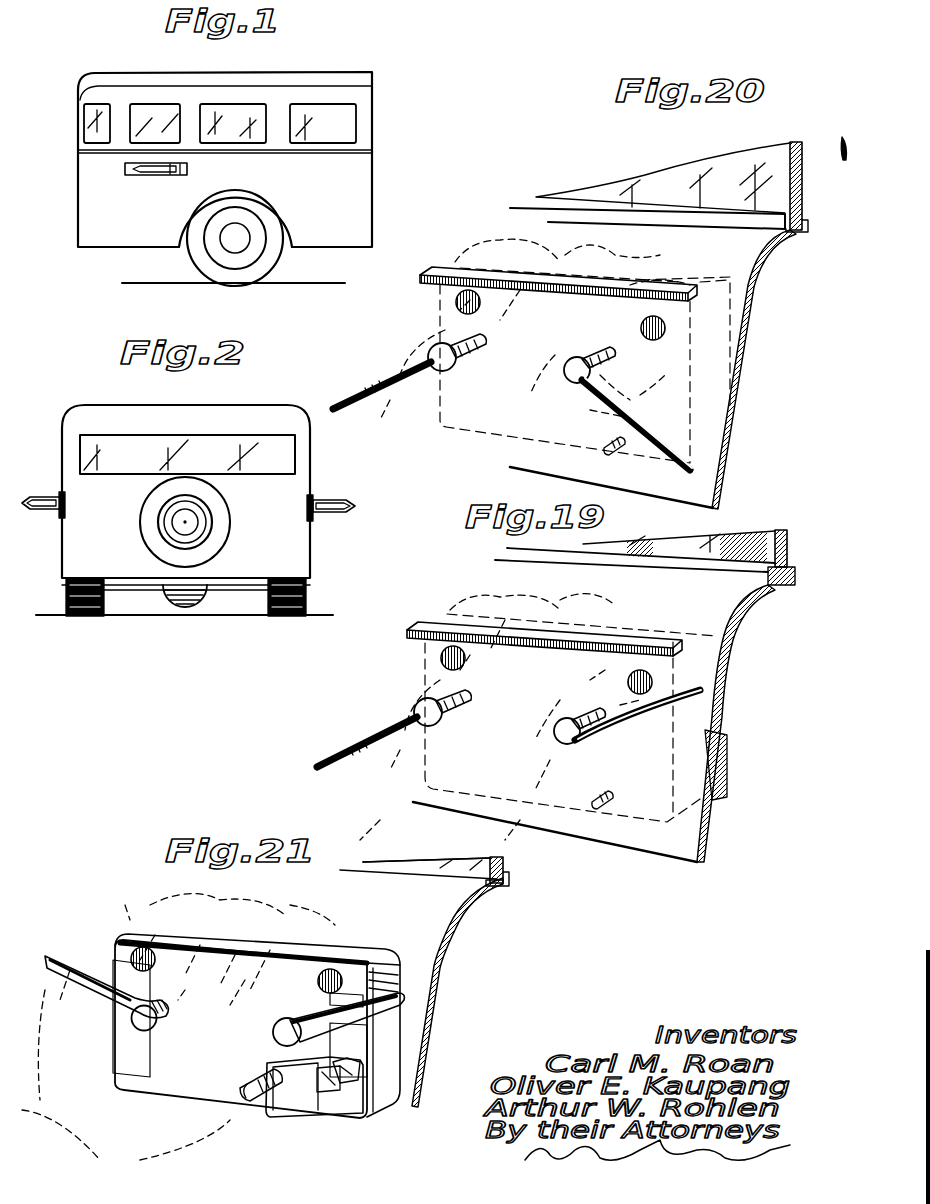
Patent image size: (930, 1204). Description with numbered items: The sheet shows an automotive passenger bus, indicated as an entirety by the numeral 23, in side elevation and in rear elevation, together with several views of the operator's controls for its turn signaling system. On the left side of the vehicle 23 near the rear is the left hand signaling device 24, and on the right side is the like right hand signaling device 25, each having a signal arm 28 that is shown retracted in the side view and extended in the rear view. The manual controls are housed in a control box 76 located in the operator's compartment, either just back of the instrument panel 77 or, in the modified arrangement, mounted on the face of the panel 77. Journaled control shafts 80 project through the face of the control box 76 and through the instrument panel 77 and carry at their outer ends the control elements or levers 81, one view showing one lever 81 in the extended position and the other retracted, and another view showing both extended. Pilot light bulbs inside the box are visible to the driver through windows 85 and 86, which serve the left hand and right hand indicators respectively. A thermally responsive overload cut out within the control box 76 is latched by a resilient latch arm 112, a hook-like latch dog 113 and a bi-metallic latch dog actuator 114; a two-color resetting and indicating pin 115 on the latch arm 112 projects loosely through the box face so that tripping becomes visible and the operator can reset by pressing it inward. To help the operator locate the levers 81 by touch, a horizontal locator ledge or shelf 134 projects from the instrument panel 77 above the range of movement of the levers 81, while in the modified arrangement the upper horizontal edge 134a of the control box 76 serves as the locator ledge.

In FIG. 1, the automotive vehicle 23 is at (90, 210).
In FIG. 2, the automotive vehicle 23 is at (72, 456).
In FIG. 2, the left hand signaling device 24 is at (60, 515).
In FIG. 1, the right hand signaling device 25 is at (170, 178).
In FIG. 2, the right hand signaling device 25 is at (318, 518).
In FIG. 1, the signal arm 28 is at (149, 177).
In FIG. 2, the signal arm 28 is at (36, 512).
In FIG. 20, the control box 76 is at (715, 452).
In FIG. 19, the control box 76 is at (730, 770).
In FIG. 21, the control box 76 is at (380, 1098).
In FIG. 20, the instrument panel 77 is at (748, 293).
In FIG. 19, the instrument panel 77 is at (710, 838).
In FIG. 21, the instrument panel 77 is at (432, 1012).
In FIG. 20, the control shaft 80 is at (470, 362).
In FIG. 19, the control shaft 80 is at (462, 714).
In FIG. 21, the control shaft 80 is at (217, 1026).
In FIG. 20, the control element or lever 81 is at (402, 392).
In FIG. 19, the control element or lever 81 is at (392, 748).
In FIG. 21, the control element or lever 81 is at (85, 1005).
In FIG. 20, the window 85 is at (476, 312).
In FIG. 19, the window 85 is at (462, 660).
In FIG. 21, the window 85 is at (143, 945).
In FIG. 20, the window 86 is at (640, 329).
In FIG. 19, the window 86 is at (668, 675).
In FIG. 21, the window 86 is at (342, 970).
In FIG. 21, the resilient latch arm 112 is at (300, 1088).
In FIG. 21, the latch dog 113 is at (330, 1103).
In FIG. 21, the bi-metallic latch dog actuator 114 is at (348, 1077).
In FIG. 20, the resetting and indicating pin 115 is at (608, 455).
In FIG. 19, the resetting and indicating pin 115 is at (598, 812).
In FIG. 21, the resetting and indicating pin 115 is at (257, 1097).
In FIG. 20, the locator ledge or shelf 134 is at (660, 275).
In FIG. 19, the locator ledge or shelf 134 is at (642, 637).
In FIG. 21, the upper horizontal edge 134a is at (338, 940).